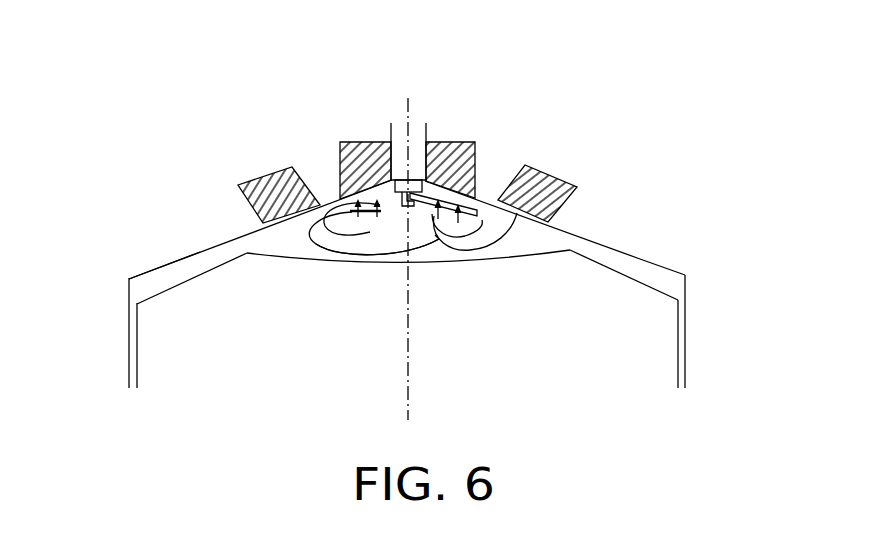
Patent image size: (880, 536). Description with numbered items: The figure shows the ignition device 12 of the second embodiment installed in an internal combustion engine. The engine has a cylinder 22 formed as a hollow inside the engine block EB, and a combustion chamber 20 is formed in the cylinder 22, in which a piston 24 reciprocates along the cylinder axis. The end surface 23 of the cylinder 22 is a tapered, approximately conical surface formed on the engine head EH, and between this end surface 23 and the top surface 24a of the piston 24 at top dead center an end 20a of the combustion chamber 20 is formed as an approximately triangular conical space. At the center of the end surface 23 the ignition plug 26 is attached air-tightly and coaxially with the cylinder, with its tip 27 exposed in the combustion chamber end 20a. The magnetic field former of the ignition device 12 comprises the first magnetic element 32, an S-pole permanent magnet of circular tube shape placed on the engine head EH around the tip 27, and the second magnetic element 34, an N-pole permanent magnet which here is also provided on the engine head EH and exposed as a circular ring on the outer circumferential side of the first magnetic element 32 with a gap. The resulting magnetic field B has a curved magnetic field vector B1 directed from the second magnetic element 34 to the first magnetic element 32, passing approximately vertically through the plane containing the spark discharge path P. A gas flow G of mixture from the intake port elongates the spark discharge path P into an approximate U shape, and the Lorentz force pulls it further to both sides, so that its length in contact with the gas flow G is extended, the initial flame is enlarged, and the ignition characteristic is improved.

The ignition device 12 is at (524, 78).
The combustion chamber 20 is at (150, 278).
The end of the combustion chamber 20a is at (273, 248).
The cylinder 22 is at (680, 282).
The end surface of the cylinder 23 is at (662, 271).
The piston 24 is at (511, 401).
The top surface of the piston 24a is at (543, 250).
The ignition plug 26 is at (429, 119).
The tip of the ignition plug 27 is at (425, 183).
The first magnetic element 32 is at (360, 141).
The second magnetic element 34 is at (265, 176).
The magnetic field B is at (481, 205).
The magnetic field vector B1 is at (460, 243).
The gas flow G is at (367, 262).
The spark discharge path P is at (430, 211).
The engine head EH is at (207, 157).
The engine block EB is at (88, 362).